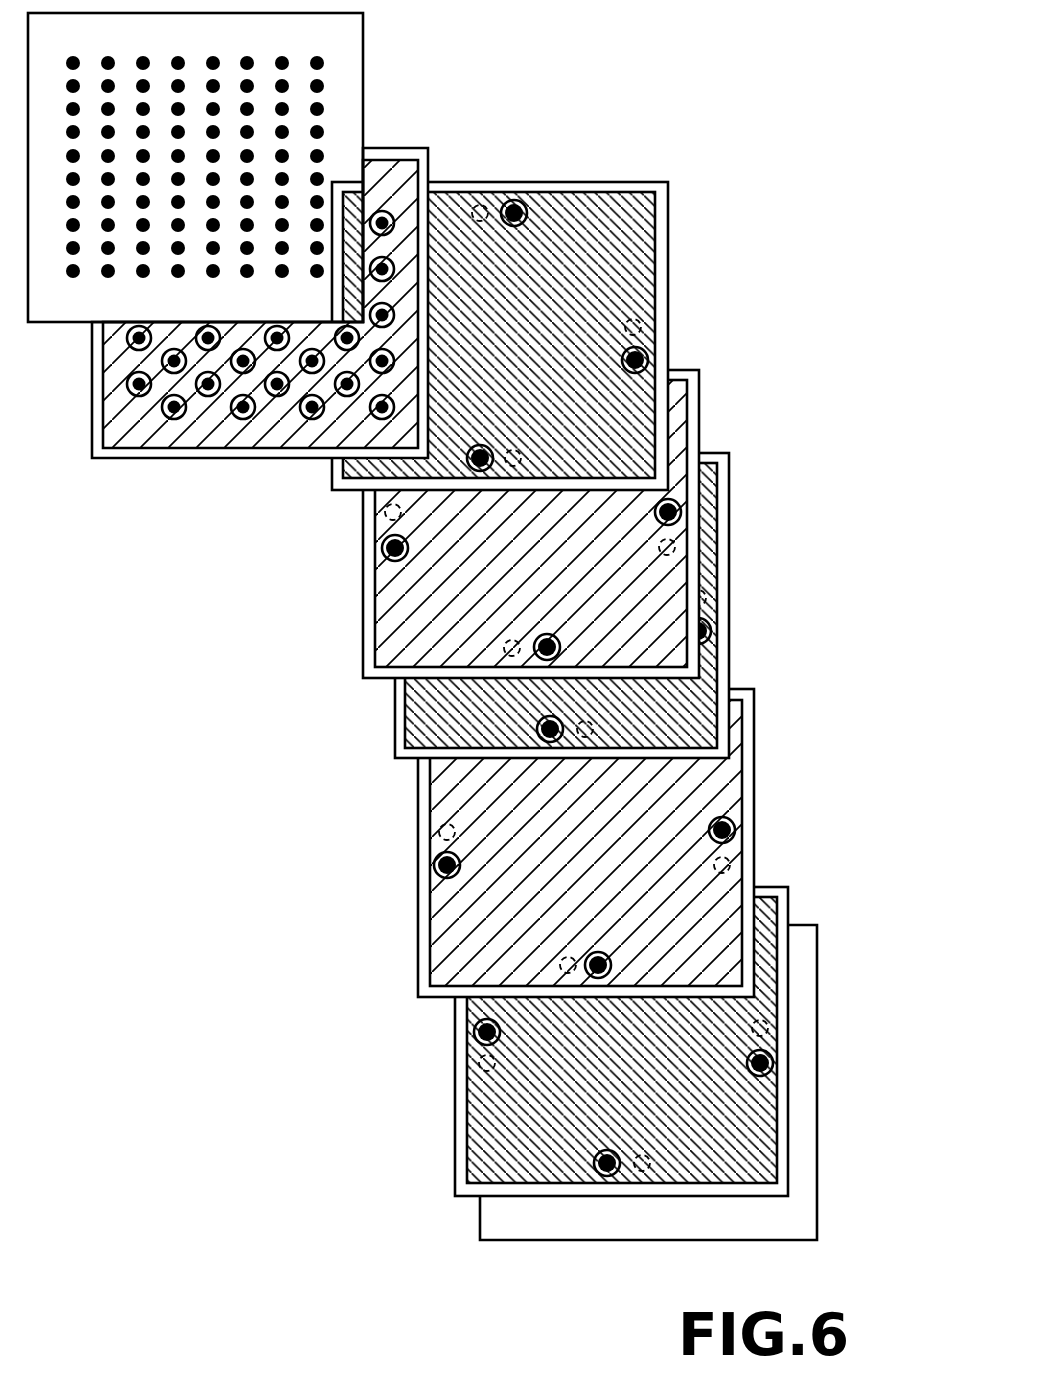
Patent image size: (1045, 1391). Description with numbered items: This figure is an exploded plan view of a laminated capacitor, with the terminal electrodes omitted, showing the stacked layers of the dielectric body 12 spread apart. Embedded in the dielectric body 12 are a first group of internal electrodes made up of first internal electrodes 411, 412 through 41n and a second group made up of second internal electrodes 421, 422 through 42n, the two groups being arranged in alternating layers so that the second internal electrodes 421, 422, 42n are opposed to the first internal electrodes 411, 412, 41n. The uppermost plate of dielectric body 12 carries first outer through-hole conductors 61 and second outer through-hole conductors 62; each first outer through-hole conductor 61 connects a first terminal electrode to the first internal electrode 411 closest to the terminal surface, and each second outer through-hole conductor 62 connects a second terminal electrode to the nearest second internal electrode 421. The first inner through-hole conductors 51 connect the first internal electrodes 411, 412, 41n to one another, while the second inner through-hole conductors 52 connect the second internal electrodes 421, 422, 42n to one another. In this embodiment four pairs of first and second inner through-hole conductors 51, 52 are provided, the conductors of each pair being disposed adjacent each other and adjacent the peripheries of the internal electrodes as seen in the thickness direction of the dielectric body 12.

The dielectric body 12 is at (363, 27).
The first outer through-hole conductor 61 is at (323, 87).
The second outer through-hole conductor 62 is at (323, 63).
The first internal electrode 411 is at (118, 406).
The second internal electrode 421 is at (590, 202).
The first internal electrode 412 is at (382, 630).
The second internal electrode 422 is at (410, 720).
The first internal electrode 41n is at (438, 952).
The second internal electrode 42n is at (458, 1150).
The first inner through-hole conductor 51 is at (514, 199).
The second inner through-hole conductor 52 is at (479, 205).